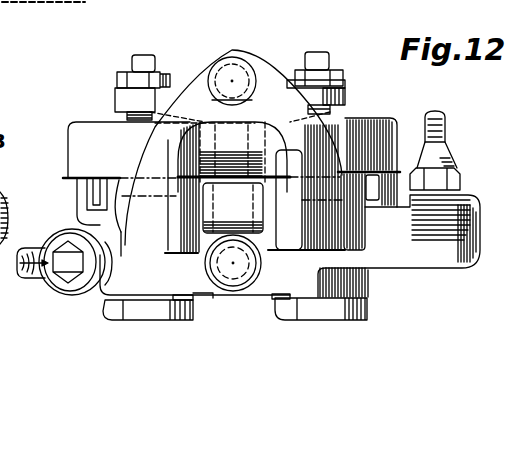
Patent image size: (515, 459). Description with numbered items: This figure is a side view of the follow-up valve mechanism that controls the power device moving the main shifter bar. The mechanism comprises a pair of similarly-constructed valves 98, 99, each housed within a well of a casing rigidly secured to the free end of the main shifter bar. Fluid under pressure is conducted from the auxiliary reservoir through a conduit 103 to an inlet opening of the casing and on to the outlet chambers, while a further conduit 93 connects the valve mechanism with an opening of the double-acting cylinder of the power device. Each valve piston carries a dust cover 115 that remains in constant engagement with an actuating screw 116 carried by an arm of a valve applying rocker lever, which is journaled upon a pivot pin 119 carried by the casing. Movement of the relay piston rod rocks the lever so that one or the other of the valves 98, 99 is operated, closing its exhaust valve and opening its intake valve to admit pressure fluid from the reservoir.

The conduit 93 is at (444, 118).
The valve 98 is at (62, 147).
The valve 99 is at (404, 112).
The conduit 103 is at (48, 275).
The dust cover 115 is at (84, 130).
The actuating screw 116 is at (145, 62).
The pivot pin 119 is at (233, 80).